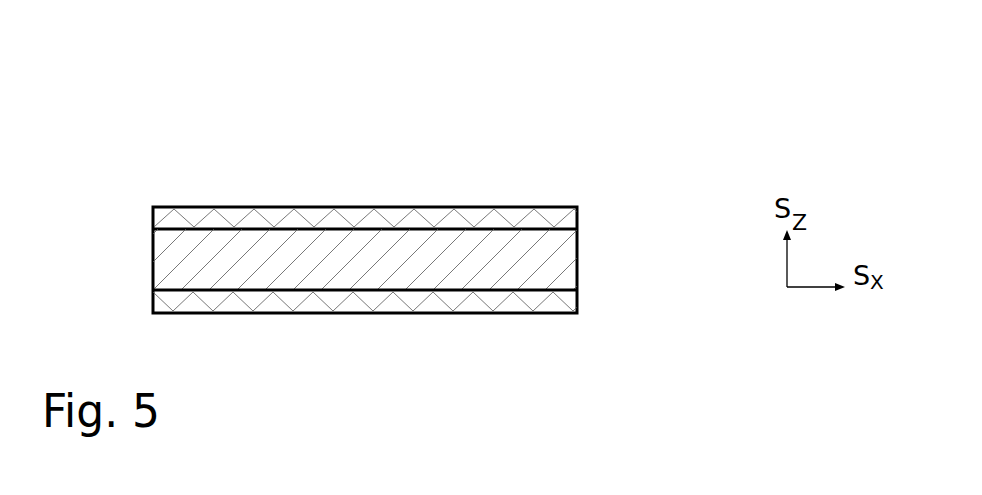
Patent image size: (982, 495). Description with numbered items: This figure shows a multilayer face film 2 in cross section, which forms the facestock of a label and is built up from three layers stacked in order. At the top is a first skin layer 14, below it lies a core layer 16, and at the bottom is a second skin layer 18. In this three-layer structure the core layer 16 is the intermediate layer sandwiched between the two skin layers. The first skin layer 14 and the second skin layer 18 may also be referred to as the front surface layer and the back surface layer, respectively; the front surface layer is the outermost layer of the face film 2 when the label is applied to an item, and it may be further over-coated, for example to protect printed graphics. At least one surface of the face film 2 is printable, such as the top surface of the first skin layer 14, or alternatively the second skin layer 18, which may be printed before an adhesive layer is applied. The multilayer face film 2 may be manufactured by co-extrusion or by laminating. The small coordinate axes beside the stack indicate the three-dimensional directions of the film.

The face film 2 is at (352, 160).
The first skin layer 14 is at (577, 222).
The core layer 16 is at (577, 260).
The second skin layer 18 is at (577, 297).